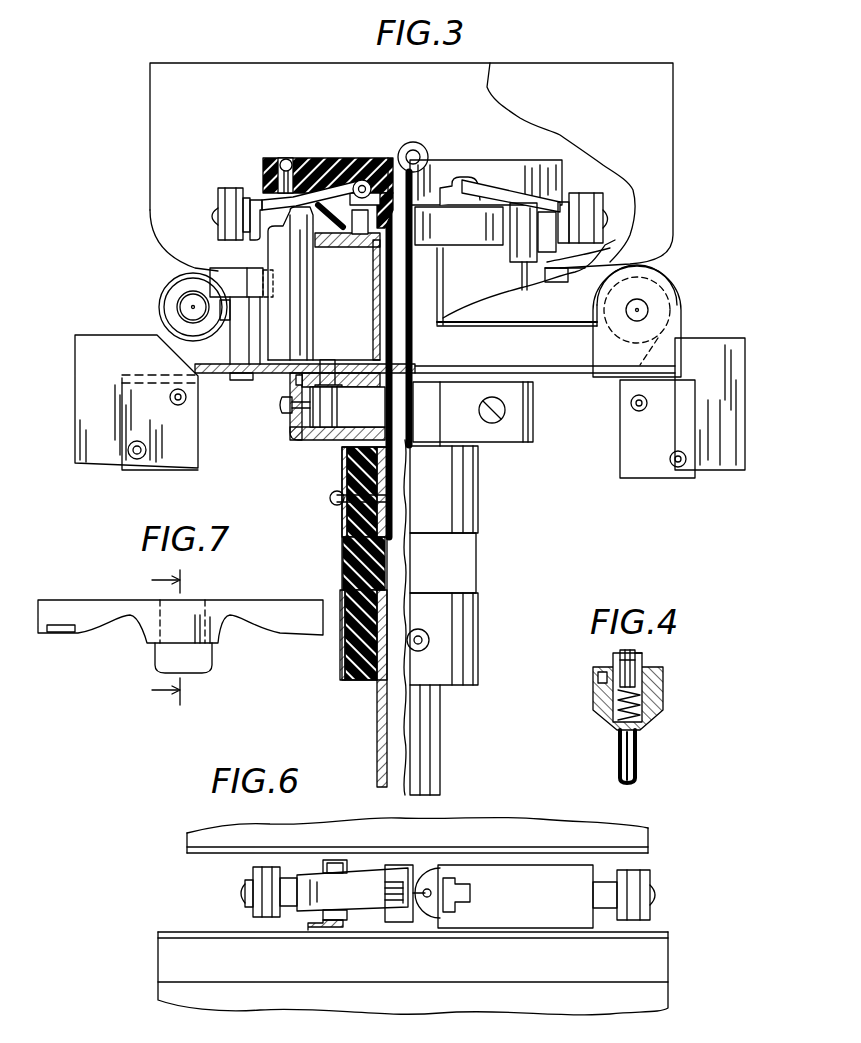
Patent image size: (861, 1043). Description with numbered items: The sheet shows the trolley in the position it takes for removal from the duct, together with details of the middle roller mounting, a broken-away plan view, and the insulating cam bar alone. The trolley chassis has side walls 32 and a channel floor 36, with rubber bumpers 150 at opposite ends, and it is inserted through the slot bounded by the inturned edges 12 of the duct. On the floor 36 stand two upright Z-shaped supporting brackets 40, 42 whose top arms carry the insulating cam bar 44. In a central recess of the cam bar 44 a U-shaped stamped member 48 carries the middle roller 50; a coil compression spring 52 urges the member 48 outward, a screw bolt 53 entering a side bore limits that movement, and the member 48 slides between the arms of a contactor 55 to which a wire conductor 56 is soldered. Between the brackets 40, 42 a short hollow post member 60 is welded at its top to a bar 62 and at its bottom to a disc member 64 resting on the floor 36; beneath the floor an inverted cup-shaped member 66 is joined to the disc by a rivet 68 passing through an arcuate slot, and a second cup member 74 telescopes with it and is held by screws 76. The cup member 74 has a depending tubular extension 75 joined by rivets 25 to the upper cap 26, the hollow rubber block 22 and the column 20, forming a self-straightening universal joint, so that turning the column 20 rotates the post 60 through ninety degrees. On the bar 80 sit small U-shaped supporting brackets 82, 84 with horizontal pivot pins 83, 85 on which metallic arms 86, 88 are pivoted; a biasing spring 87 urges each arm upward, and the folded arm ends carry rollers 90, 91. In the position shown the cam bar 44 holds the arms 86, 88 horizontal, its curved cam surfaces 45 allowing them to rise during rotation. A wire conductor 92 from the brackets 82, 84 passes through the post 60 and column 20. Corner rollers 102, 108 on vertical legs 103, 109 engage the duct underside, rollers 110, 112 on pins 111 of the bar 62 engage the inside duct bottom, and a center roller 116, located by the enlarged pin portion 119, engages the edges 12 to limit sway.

In FIG. 6, the inturned edges 12 is at (203, 853).
In FIG. 3, the column 20 is at (377, 724).
In FIG. 3, the rubber block 22 is at (452, 569).
In FIG. 3, the rivets 25 is at (334, 500).
In FIG. 3, the upper cap 26 is at (480, 517).
In FIG. 3, the side walls 32 is at (170, 125).
In FIG. 3, the floor 36 is at (224, 373).
In FIG. 3, the Z-shaped supporting bracket 40 is at (282, 243).
In FIG. 6, the Z-shaped supporting bracket 40 is at (323, 927).
In FIG. 3, the Z-shaped supporting bracket 42 is at (575, 262).
In FIG. 3, the insulating cam bar 44 is at (560, 171).
In FIG. 7, the insulating cam bar 44 is at (62, 607).
In FIG. 4, the insulating cam bar 44 is at (664, 676).
In FIG. 6, the insulating cam bar 44 is at (540, 911).
In FIG. 7, the cam surfaces 45 is at (112, 624).
In FIG. 4, the U-shaped member 48 is at (640, 662).
In FIG. 3, the roller 50 is at (416, 150).
In FIG. 4, the roller 50 is at (620, 652).
In FIG. 6, the roller 50 is at (455, 878).
In FIG. 4, the coil compression spring 52 is at (648, 708).
In FIG. 4, the screw bolt 53 is at (598, 677).
In FIG. 4, the contactor 55 is at (603, 715).
In FIG. 3, the wire conductor 56 is at (410, 420).
In FIG. 4, the wire conductor 56 is at (638, 770).
In FIG. 3, the post member 60 is at (377, 302).
In FIG. 3, the bar 62 is at (427, 230).
In FIG. 3, the disc member 64 is at (357, 357).
In FIG. 3, the cup-shaped member 66 is at (337, 406).
In FIG. 3, the rivet 68 is at (294, 383).
In FIG. 3, the cup member 74 is at (296, 437).
In FIG. 3, the tubular extension 75 is at (345, 460).
In FIG. 3, the screws 76 is at (284, 412).
In FIG. 3, the bar 80 is at (494, 210).
In FIG. 3, the supporting bracket 82 is at (470, 177).
In FIG. 3, the pivot pin 83 is at (468, 180).
In FIG. 3, the supporting bracket 84 is at (388, 157).
In FIG. 3, the pivot pin 85 is at (361, 180).
In FIG. 3, the arm 86 is at (550, 204).
In FIG. 6, the arm 86 is at (600, 910).
In FIG. 6, the biasing spring 87 is at (400, 905).
In FIG. 3, the arm 88 is at (337, 158).
In FIG. 6, the arm 88 is at (302, 897).
In FIG. 3, the roller 90 is at (597, 207).
In FIG. 6, the roller 90 is at (633, 875).
In FIG. 3, the roller 91 is at (233, 195).
In FIG. 6, the roller 91 is at (270, 907).
In FIG. 3, the wire conductor 92 is at (378, 273).
In FIG. 3, the roller 102 is at (652, 283).
In FIG. 3, the vertical leg 103 is at (672, 328).
In FIG. 3, the roller 108 is at (180, 292).
In FIG. 3, the vertical leg 109 is at (163, 298).
In FIG. 3, the roller 110 is at (612, 270).
In FIG. 3, the pin 111 is at (500, 243).
In FIG. 6, the roller 112 is at (343, 923).
In FIG. 3, the roller 116 is at (225, 276).
In FIG. 3, the enlarged lower portion 119 is at (238, 338).
In FIG. 3, the rubber bumpers 150 is at (80, 404).